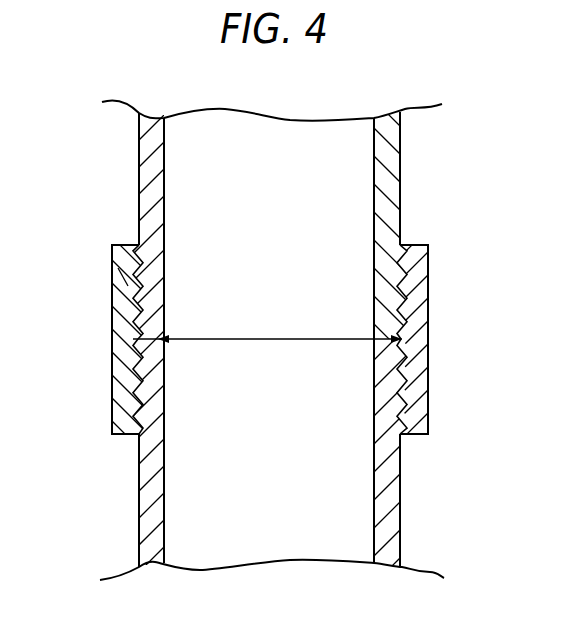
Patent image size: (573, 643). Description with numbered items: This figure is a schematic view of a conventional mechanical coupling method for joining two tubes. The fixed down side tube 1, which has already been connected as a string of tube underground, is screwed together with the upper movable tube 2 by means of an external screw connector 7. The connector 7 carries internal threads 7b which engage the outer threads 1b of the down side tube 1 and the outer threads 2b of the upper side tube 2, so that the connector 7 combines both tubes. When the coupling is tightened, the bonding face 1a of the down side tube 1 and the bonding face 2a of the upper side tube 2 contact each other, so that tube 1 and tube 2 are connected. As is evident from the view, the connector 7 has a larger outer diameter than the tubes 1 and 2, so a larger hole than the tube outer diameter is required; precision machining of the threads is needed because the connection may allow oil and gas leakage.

The down side tube 1 is at (410, 508).
The bonding face of the down side tube 1a is at (404, 357).
The external thread of first tube member 1b is at (143, 404).
The upper side tube 2 is at (410, 163).
The bonding face of the upper side tube 2a is at (135, 355).
The external thread of second tube member 2b is at (143, 312).
The external screw connector 7 is at (438, 400).
The internal thread of coupling nut 7b is at (125, 290).